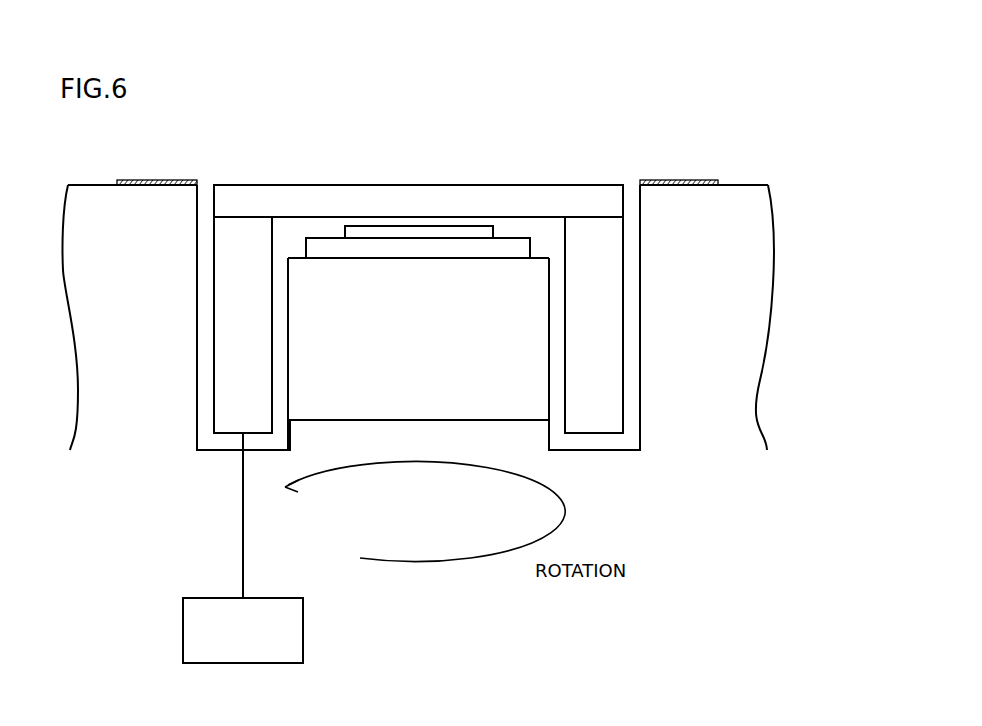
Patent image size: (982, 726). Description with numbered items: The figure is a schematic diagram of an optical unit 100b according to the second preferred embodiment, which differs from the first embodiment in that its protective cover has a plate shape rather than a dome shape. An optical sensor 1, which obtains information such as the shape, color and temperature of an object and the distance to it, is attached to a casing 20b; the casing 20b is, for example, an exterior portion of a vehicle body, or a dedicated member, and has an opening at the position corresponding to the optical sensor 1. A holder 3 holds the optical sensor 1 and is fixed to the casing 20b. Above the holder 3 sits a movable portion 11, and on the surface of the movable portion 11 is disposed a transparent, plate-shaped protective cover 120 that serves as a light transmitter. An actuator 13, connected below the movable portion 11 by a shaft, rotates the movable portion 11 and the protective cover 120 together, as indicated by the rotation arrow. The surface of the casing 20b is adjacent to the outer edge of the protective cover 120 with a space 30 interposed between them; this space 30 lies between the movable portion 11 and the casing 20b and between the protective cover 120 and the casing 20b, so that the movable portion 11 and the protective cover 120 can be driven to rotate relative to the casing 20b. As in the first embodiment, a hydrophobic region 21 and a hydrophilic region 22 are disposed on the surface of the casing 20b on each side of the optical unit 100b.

The optical sensor 1 is at (477, 233).
The holder 3 is at (528, 350).
The movable portion 11 is at (610, 316).
The actuator 13 is at (260, 597).
The casing 20b is at (747, 195).
The hydrophobic region 21 is at (178, 178).
The hydrophilic region 22 is at (141, 178).
The space 30 is at (207, 168).
The optical unit 100b is at (559, 157).
The protective cover 120 is at (417, 193).